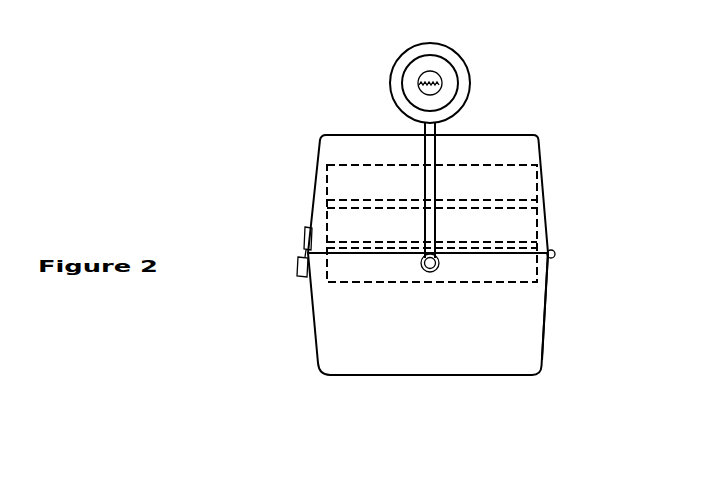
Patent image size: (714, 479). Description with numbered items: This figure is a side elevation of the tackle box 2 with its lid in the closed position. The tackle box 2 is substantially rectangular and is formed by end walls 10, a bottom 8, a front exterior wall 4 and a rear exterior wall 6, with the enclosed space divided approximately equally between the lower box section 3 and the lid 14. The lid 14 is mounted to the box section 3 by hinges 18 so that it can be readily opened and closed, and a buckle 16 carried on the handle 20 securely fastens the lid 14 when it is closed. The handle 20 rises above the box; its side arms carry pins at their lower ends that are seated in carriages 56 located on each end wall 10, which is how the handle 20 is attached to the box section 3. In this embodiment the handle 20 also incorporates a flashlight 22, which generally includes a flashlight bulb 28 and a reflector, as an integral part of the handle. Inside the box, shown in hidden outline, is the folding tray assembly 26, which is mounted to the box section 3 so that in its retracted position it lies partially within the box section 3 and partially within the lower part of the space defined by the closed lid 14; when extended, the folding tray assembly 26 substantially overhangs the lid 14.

The tackle box 2 is at (300, 105).
The box section 3 is at (500, 383).
The front exterior wall 4 is at (315, 352).
The rear exterior wall 6 is at (546, 342).
The bottom 8 is at (447, 377).
The end walls 10 is at (435, 197).
The lid 14 is at (540, 135).
The buckle 16 is at (300, 278).
The hinges 18 is at (554, 258).
The handle 20 is at (416, 153).
The flashlight 22 is at (446, 46).
The folding tray assembly 26 is at (323, 218).
The flashlight bulb 28 is at (440, 73).
The carriages 56 is at (437, 270).